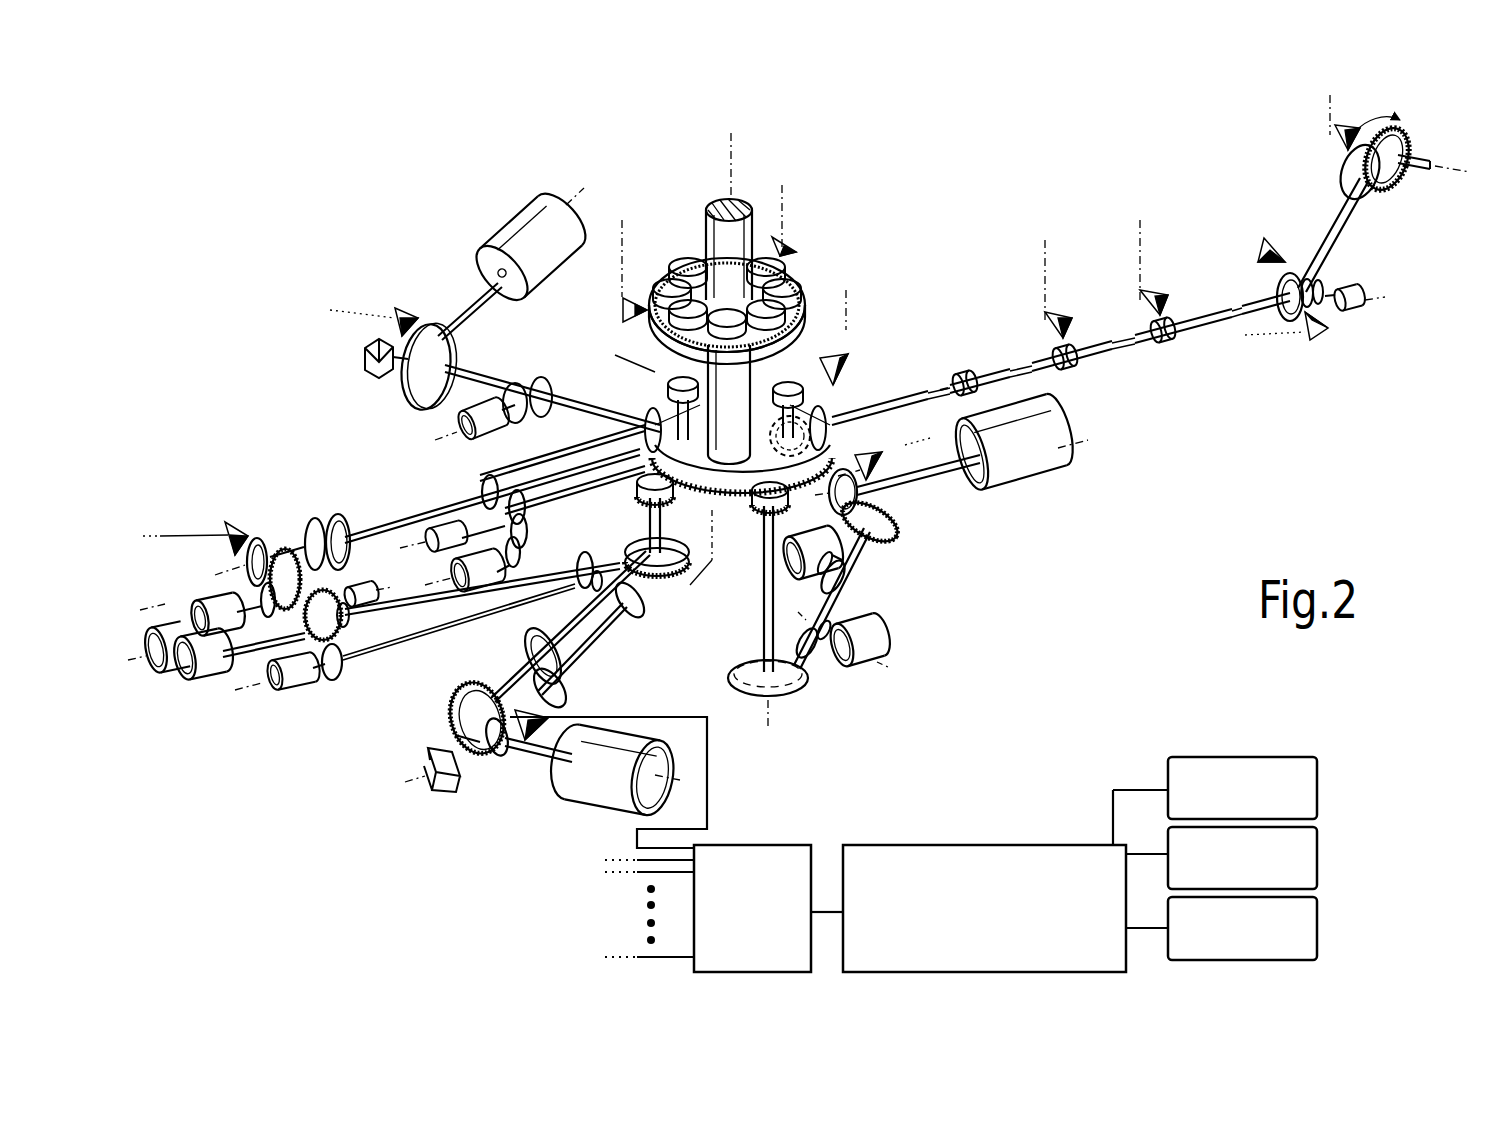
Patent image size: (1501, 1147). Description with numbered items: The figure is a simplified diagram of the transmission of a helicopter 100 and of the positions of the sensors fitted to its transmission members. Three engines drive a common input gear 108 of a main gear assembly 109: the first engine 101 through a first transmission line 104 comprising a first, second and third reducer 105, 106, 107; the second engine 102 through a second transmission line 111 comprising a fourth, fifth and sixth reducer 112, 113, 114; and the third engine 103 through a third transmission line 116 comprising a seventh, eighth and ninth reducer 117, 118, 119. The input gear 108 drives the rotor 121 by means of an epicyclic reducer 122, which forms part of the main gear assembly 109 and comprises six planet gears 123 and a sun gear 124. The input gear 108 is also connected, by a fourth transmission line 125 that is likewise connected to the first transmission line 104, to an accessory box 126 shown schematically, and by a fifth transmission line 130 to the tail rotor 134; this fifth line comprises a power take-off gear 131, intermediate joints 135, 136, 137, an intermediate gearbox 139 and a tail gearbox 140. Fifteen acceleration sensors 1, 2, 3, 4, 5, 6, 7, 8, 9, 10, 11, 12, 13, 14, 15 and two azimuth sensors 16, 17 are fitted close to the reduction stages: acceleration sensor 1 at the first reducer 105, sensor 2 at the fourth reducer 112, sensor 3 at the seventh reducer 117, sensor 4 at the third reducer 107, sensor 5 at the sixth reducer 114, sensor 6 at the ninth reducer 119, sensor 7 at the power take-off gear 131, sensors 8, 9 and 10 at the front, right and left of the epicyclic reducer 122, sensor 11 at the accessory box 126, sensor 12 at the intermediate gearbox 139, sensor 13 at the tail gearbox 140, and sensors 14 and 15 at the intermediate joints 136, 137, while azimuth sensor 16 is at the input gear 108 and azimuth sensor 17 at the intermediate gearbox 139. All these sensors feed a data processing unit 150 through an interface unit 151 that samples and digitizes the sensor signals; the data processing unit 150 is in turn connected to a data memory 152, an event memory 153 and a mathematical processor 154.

The helicopter 100 is at (266, 232).
The acceleration sensor 1 is at (505, 700).
The acceleration sensor 2 is at (905, 478).
The acceleration sensor 3 is at (410, 322).
The acceleration sensor 4 is at (622, 466).
The acceleration sensor 5 is at (815, 468).
The acceleration sensor 6 is at (660, 365).
The acceleration sensor 7 is at (880, 322).
The acceleration sensor 8 is at (628, 306).
The acceleration sensor 9 is at (808, 388).
The acceleration sensor 10 is at (790, 250).
The acceleration sensor 11 is at (240, 528).
The acceleration sensor 12 is at (1318, 335).
The acceleration sensor 13 is at (1395, 128).
The acceleration sensor 14 is at (1062, 315).
The acceleration sensor 15 is at (1158, 292).
The azimuth sensor 16 is at (712, 505).
The azimuth sensor 17 is at (1270, 258).
The first engine 101 is at (580, 780).
The second engine 102 is at (1020, 462).
The third engine 103 is at (525, 238).
The first transmission line 104 is at (588, 658).
The first reducer 105 is at (495, 768).
The second reducer 106 is at (650, 585).
The third reducer 107 is at (705, 535).
The input gear 108 is at (802, 514).
The main gear assembly 109 is at (880, 365).
The second transmission line 111 is at (862, 575).
The fourth reducer 112 is at (893, 512).
The fifth reducer 113 is at (815, 680).
The sixth reducer 114 is at (882, 512).
The third transmission line 116 is at (460, 400).
The seventh reducer 117 is at (462, 330).
The eighth reducer 118 is at (635, 432).
The ninth reducer 119 is at (655, 388).
The rotor 121 is at (735, 205).
The epicyclic reducer 122 is at (672, 262).
The planet gears 123 is at (790, 300).
The sun gear 124 is at (782, 312).
The fourth transmission line 125 is at (365, 515).
The accessory box 126 is at (205, 680).
The fifth transmission line 130 is at (1145, 365).
The power take-off gear 131 is at (885, 382).
The tail rotor 134 is at (1432, 180).
The intermediate joint 135 is at (1040, 469).
The intermediate joint 136 is at (1078, 372).
The intermediate joint 137 is at (1180, 345).
The intermediate gearbox 139 is at (1380, 285).
The tail gearbox 140 is at (1340, 175).
The data processing unit 150 is at (977, 856).
The interface unit 151 is at (757, 856).
The data memory 152 is at (1312, 855).
The event memory 153 is at (1310, 790).
The mathematical processor 154 is at (1312, 924).